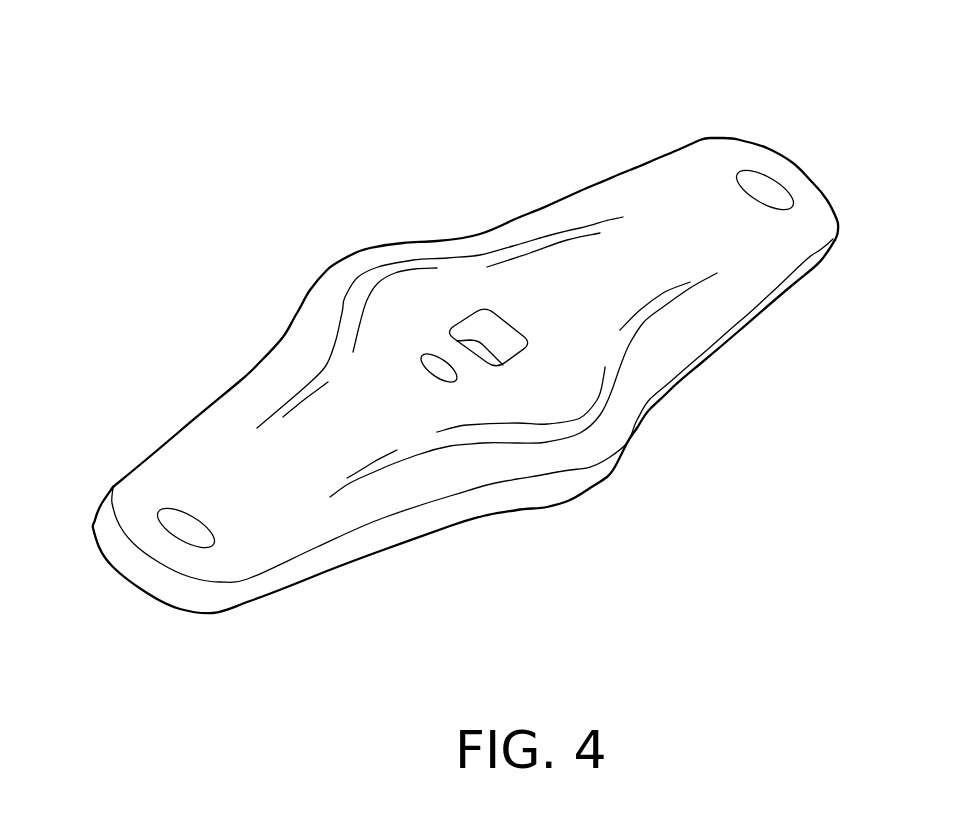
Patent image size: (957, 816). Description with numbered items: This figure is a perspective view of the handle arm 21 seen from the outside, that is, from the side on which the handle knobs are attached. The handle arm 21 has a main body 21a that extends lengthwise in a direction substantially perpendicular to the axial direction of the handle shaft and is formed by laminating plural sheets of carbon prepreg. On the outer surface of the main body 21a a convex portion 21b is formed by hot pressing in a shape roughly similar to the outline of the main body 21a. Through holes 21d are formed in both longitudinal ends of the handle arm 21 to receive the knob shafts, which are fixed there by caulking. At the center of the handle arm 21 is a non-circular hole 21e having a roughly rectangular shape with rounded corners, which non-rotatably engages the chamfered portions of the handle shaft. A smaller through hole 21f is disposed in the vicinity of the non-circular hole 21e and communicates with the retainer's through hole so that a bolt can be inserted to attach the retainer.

The handle arm 21 is at (524, 359).
The main body 21a is at (643, 168).
The convex portion 21b is at (623, 307).
The through hole 21d is at (195, 535).
The non-circular hole 21e is at (483, 323).
The through hole 21f is at (428, 362).